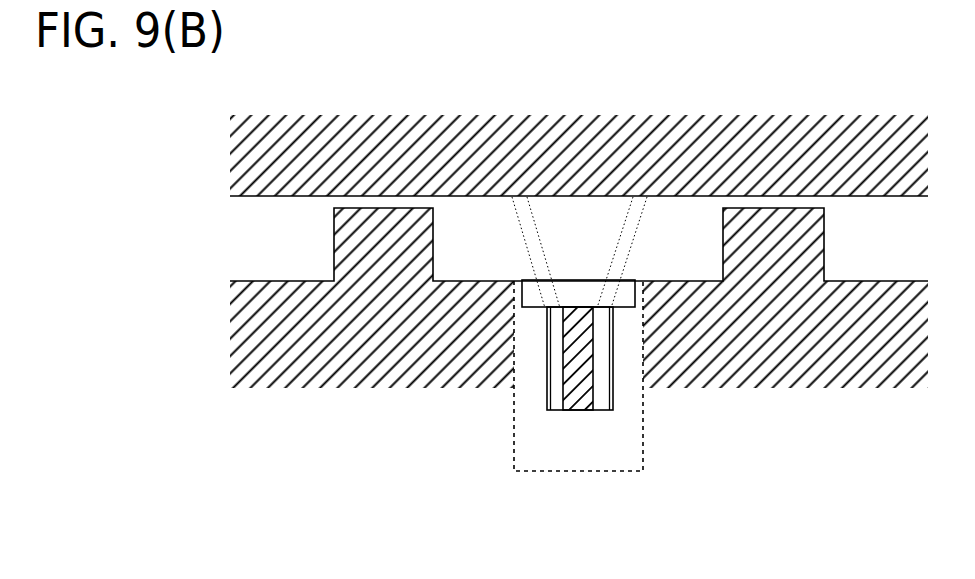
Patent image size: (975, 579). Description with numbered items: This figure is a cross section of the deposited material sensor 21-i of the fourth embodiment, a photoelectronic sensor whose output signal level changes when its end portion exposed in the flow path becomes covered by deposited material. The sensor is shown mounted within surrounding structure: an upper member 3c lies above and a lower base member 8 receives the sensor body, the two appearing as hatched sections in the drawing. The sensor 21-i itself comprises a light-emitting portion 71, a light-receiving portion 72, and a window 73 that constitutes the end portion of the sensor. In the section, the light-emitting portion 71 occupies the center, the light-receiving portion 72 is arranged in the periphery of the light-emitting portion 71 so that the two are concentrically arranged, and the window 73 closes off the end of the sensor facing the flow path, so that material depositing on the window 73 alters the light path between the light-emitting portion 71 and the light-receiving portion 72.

The upper member 3c is at (750, 136).
The base member 8 is at (450, 288).
The deposited material sensor 21-i is at (533, 478).
The light-emitting portion 71 is at (580, 392).
The light-receiving portion 72 is at (603, 392).
The window 73 is at (625, 300).